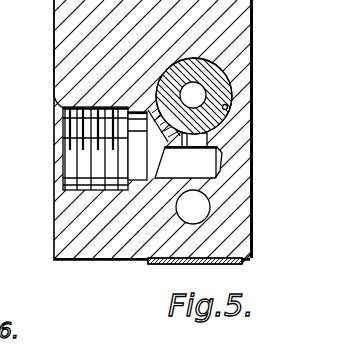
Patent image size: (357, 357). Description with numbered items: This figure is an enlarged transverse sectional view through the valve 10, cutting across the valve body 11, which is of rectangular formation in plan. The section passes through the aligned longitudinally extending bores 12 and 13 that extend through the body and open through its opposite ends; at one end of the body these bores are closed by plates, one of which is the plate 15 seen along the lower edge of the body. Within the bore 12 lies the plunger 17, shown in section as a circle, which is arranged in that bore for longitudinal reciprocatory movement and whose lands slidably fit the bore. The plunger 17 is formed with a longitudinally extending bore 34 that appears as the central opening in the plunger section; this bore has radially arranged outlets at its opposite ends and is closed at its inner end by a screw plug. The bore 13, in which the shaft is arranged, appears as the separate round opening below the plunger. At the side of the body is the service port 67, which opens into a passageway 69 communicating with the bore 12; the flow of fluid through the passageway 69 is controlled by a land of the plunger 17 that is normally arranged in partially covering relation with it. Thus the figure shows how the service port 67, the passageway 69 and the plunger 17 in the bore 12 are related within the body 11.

The valve 10 is at (50, 72).
The valve body 11 is at (72, 24).
The bore 12 is at (228, 108).
The bore 13 is at (203, 207).
The plate 15 is at (232, 262).
The plunger 17 is at (205, 88).
The bore 34 is at (214, 90).
The service port 67 is at (67, 165).
The passageway 69 is at (220, 145).